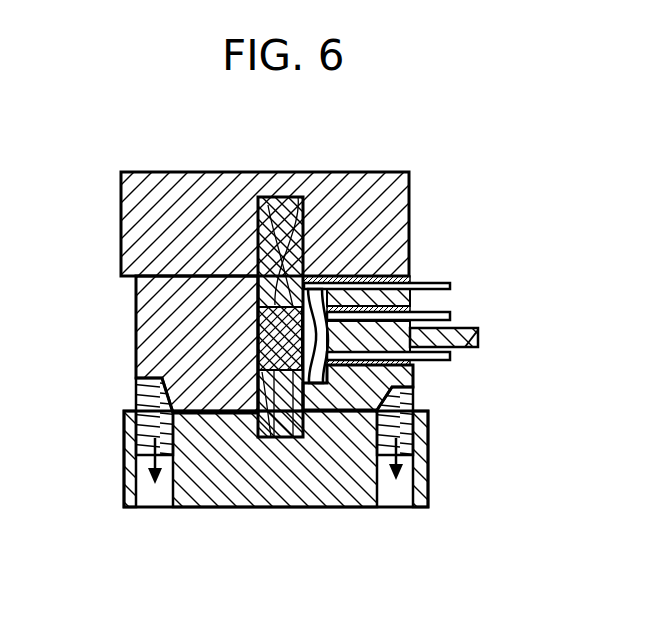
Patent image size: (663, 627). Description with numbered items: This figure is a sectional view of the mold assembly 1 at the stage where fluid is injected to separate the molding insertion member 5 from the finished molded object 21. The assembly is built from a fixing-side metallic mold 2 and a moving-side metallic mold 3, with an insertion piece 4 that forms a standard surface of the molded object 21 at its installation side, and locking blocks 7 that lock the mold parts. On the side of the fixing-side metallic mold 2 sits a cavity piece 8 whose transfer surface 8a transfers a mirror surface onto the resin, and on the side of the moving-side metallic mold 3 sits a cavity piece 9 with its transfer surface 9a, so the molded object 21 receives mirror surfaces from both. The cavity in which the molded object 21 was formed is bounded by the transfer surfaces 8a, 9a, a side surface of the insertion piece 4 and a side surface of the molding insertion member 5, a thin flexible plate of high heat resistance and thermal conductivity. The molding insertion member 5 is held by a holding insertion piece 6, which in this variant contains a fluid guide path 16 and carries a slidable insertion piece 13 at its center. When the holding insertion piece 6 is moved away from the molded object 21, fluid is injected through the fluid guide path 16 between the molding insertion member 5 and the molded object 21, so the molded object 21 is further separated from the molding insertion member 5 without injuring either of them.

The mold assembly 1 is at (142, 146).
The fixing-side metallic mold 2 is at (121, 212).
The moving-side metallic mold 3 is at (190, 500).
The insertion piece 4 is at (148, 302).
The molding insertion member 5 is at (295, 440).
The holding insertion piece 6 is at (410, 375).
The locking blocks 7 is at (145, 395).
The cavity piece 8 is at (272, 197).
The transfer surface 8a is at (302, 260).
The cavity piece 9 is at (270, 437).
The transfer surface 9a is at (256, 437).
The slidable insertion piece 13 is at (478, 338).
The fluid guide path 16 is at (425, 283).
The molded object 21 is at (258, 330).